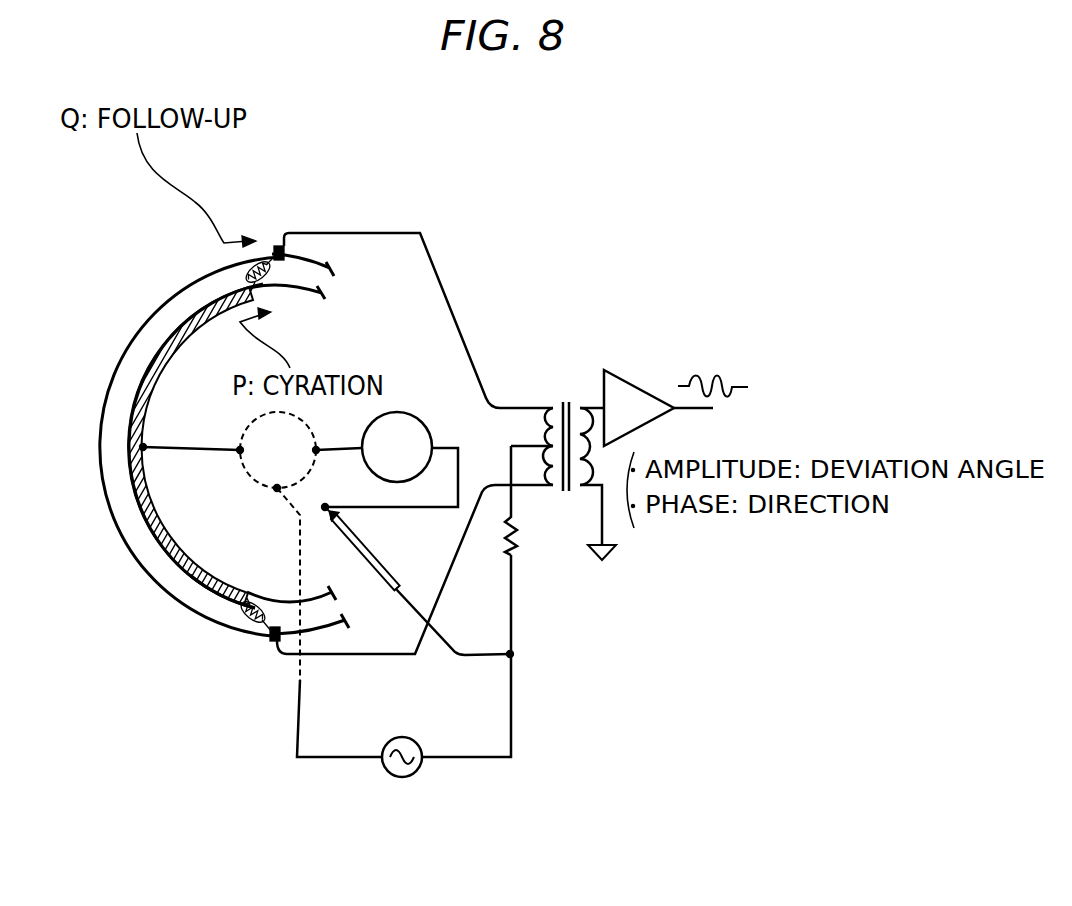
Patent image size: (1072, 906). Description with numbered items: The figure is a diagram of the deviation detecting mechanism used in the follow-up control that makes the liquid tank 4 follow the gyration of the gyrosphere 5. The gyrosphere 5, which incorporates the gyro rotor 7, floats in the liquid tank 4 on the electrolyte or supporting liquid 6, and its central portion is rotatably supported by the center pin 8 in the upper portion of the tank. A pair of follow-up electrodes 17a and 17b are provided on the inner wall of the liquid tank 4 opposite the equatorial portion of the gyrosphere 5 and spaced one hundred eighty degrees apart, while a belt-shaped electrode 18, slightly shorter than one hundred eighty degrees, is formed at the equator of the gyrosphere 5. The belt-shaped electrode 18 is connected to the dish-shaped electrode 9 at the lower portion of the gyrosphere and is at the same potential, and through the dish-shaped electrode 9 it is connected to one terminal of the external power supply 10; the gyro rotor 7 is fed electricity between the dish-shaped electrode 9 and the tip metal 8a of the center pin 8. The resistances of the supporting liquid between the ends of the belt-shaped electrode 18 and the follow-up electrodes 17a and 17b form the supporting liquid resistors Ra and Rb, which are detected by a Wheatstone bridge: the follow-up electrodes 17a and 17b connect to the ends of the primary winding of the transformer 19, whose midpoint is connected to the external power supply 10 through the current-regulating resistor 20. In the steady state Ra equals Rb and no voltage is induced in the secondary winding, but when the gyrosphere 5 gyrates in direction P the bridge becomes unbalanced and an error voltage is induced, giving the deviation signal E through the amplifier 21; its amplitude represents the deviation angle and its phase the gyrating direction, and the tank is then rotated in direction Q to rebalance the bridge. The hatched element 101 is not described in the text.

The liquid tank 4 is at (127, 545).
The gyrosphere 5 is at (297, 292).
The electrolyte (supporting liquid) 6 is at (150, 330).
The gyro rotor 7 is at (405, 423).
The center pin 8 is at (383, 575).
The tip metal 8a is at (337, 492).
The dish-shaped electrode 9 is at (240, 432).
The external power supply 10 is at (402, 777).
The follow-up electrode 17a is at (286, 249).
The follow-up electrode 17b is at (267, 640).
The belt-shaped electrode 18 is at (187, 570).
The transformer 19 is at (568, 403).
The resistor 20 is at (517, 537).
The amplifier 21 is at (632, 390).
The resistance element 101 is at (162, 517).
The supporting liquid resistor Ra is at (262, 258).
The supporting liquid resistor Rb is at (246, 620).
The deviation signal E is at (703, 377).